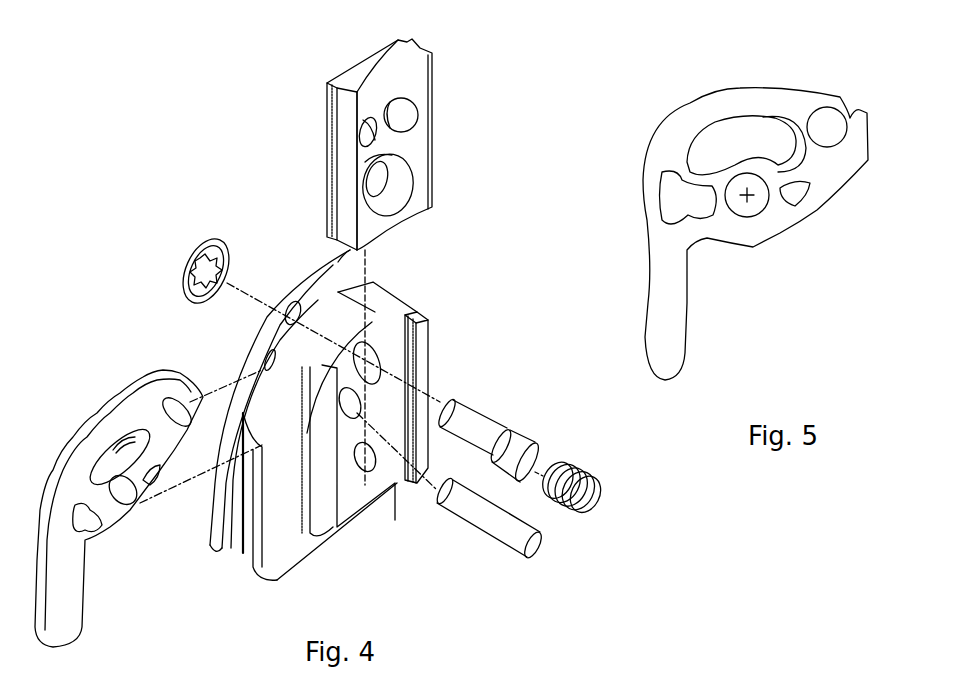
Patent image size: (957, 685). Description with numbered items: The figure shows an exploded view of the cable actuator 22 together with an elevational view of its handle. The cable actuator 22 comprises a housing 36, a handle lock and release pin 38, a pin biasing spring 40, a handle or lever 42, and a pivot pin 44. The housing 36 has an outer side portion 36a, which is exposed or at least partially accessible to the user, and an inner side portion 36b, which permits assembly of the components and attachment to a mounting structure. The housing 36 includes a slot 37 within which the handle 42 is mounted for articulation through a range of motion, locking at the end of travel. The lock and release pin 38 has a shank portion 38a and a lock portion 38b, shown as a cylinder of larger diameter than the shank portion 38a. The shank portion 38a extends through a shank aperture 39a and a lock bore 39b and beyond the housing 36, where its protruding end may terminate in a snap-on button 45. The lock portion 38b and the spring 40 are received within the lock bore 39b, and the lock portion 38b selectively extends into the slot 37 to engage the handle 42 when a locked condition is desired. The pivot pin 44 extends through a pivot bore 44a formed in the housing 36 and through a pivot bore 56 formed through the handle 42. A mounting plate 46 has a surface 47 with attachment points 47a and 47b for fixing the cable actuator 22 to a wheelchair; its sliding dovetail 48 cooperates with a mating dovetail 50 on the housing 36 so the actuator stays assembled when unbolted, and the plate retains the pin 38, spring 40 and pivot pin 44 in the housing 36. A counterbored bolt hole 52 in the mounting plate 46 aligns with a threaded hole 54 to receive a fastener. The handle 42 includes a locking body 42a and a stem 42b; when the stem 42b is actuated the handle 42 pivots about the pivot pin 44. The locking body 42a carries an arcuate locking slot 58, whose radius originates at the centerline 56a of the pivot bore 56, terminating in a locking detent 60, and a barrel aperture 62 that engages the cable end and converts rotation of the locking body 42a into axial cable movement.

In FIG. 4, the cable actuator 22 is at (143, 205).
In FIG. 4, the housing 36 is at (445, 284).
In FIG. 4, the outer side portion 36a is at (280, 287).
In FIG. 4, the inner side portion 36b is at (377, 303).
In FIG. 4, the slot 37 is at (332, 282).
In FIG. 4, the handle lock and release pin 38 is at (505, 401).
In FIG. 4, the shank portion 38a is at (467, 420).
In FIG. 4, the lock portion 38b is at (515, 440).
In FIG. 4, the shank aperture 39a is at (297, 323).
In FIG. 4, the lock bore 39b is at (362, 363).
In FIG. 4, the pin biasing spring 40 is at (600, 490).
In FIG. 4, the handle 42 is at (143, 557).
In FIG. 5, the handle 42 is at (672, 52).
In FIG. 4, the locking body 42a is at (107, 394).
In FIG. 5, the locking body 42a is at (830, 235).
In FIG. 4, the stem 42b is at (72, 600).
In FIG. 5, the stem 42b is at (665, 333).
In FIG. 4, the pivot pin 44 is at (483, 530).
In FIG. 4, the pivot bore 44a is at (352, 413).
In FIG. 4, the snap-on button 45 is at (189, 257).
In FIG. 4, the mounting plate 46 is at (395, 52).
In FIG. 4, the surface 47 is at (405, 80).
In FIG. 4, the attachment point 47a is at (405, 117).
In FIG. 4, the attachment point 47b is at (365, 143).
In FIG. 4, the sliding dovetail 48 is at (333, 160).
In FIG. 4, the mating dovetail 50 is at (397, 365).
In FIG. 4, the bolt hole 52 is at (388, 185).
In FIG. 4, the threaded hole 54 is at (362, 462).
In FIG. 4, the pivot bore 56 is at (120, 493).
In FIG. 5, the pivot bore 56 is at (757, 207).
In FIG. 5, the centerline 56a is at (747, 197).
In FIG. 4, the locking slot 58 is at (100, 478).
In FIG. 5, the locking slot 58 is at (727, 136).
In FIG. 4, the locking detent 60 is at (135, 443).
In FIG. 5, the locking detent 60 is at (793, 125).
In FIG. 4, the barrel aperture 62 is at (178, 410).
In FIG. 5, the barrel aperture 62 is at (827, 125).